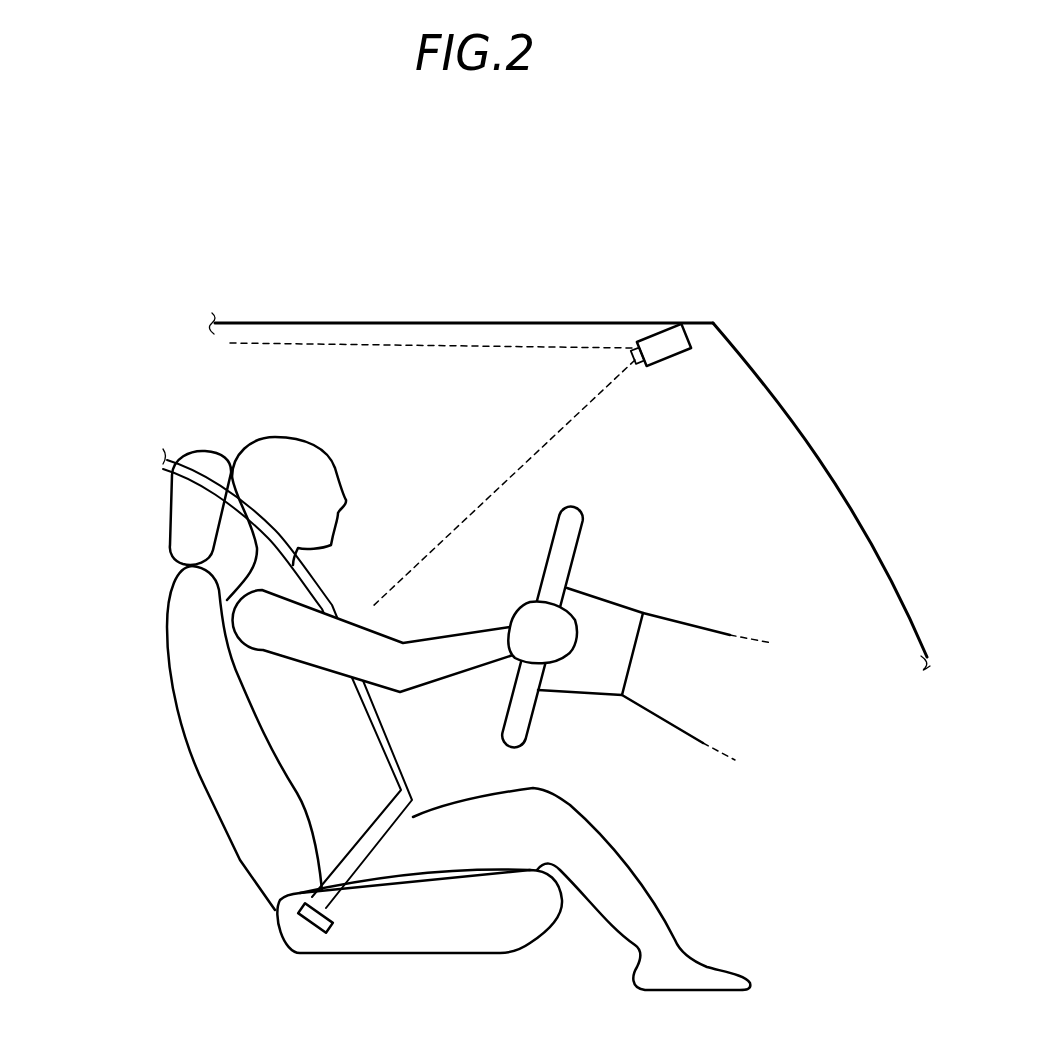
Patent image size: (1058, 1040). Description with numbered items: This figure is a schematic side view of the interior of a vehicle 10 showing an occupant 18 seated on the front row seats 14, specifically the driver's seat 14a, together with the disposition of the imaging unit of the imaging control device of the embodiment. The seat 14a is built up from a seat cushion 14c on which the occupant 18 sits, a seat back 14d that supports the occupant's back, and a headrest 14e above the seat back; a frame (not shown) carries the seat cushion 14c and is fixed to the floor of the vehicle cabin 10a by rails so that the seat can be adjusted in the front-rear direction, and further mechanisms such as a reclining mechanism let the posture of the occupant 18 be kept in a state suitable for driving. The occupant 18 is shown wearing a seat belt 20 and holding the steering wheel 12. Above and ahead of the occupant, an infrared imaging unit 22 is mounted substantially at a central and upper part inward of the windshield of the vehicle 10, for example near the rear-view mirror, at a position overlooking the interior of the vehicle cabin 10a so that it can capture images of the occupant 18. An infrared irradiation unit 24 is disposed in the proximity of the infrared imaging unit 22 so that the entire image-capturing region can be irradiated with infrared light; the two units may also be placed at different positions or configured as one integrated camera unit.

The vehicle 10 is at (355, 318).
The vehicle cabin 10a is at (757, 430).
The infrared imaging unit 22 is at (562, 439).
The infrared irradiation unit 24 is at (668, 340).
The steering wheel 12 is at (572, 504).
The occupant 18 is at (283, 436).
The front row seats 14 is at (289, 733).
The seat 14a is at (168, 643).
The seat back 14d is at (225, 776).
The headrest 14e is at (182, 520).
The seat cushion 14c is at (420, 938).
The seat belt 20 is at (350, 877).